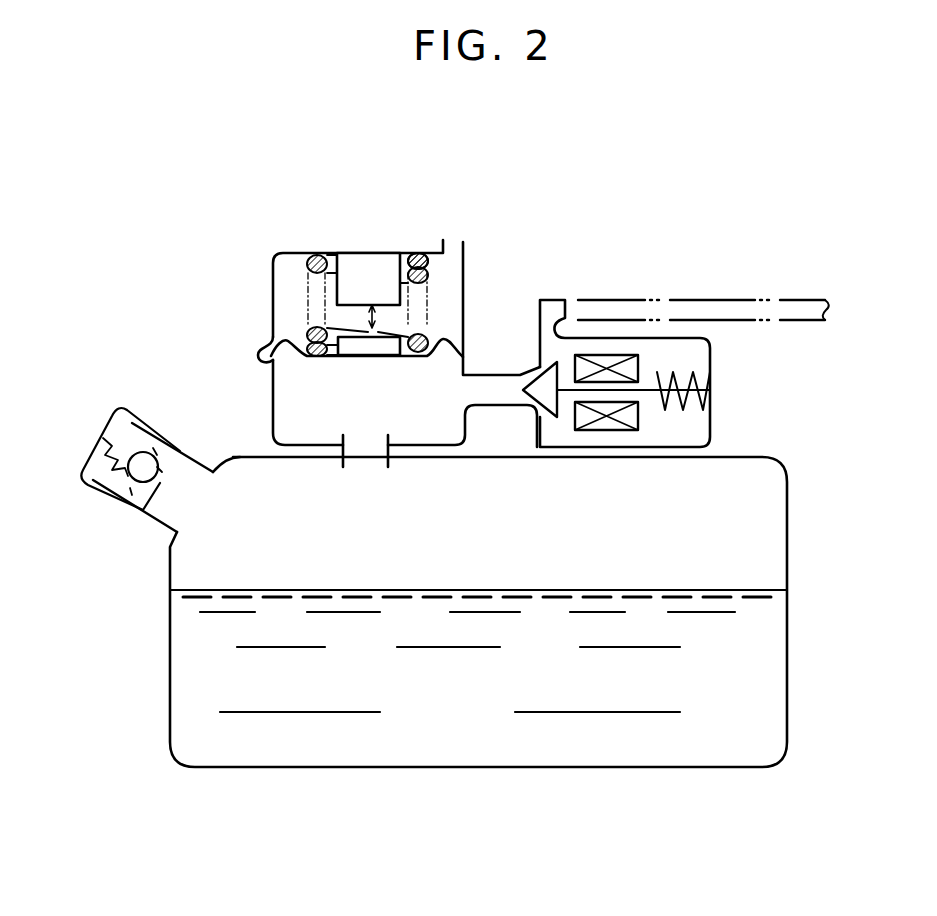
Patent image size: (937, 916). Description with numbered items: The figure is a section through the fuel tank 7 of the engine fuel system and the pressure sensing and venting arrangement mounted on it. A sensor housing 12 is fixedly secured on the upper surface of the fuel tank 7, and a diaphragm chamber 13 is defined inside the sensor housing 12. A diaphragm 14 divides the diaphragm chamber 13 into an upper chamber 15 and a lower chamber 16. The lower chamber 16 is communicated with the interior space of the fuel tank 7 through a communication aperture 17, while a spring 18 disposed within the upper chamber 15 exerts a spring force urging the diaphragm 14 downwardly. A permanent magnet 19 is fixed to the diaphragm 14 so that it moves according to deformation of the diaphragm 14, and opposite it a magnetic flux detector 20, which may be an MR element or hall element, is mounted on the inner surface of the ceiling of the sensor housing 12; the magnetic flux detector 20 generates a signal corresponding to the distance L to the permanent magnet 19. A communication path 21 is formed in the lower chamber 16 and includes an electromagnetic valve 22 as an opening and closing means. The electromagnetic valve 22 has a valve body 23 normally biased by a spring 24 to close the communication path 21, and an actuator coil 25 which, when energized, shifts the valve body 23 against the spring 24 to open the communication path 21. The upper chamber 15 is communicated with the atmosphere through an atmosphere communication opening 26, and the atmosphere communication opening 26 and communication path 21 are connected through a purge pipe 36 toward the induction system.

The fuel tank 7 is at (528, 769).
The sensor housing 12 is at (270, 362).
The diaphragm chamber 13 is at (273, 295).
The diaphragm 14 is at (332, 358).
The upper chamber 15 is at (284, 284).
The lower chamber 16 is at (286, 426).
The communication aperture 17 is at (381, 455).
The spring 18 is at (427, 267).
The permanent magnet 19 is at (380, 347).
The magnetic flux detector 20 is at (384, 265).
The communication path 21 is at (497, 408).
The electromagnetic valve 22 is at (713, 405).
The valve body 23 is at (545, 430).
The spring 24 is at (690, 414).
The actuator coil 25 is at (614, 437).
The atmosphere communication opening 26 is at (455, 246).
The purge pipe 36 is at (628, 298).
The distance L is at (372, 320).